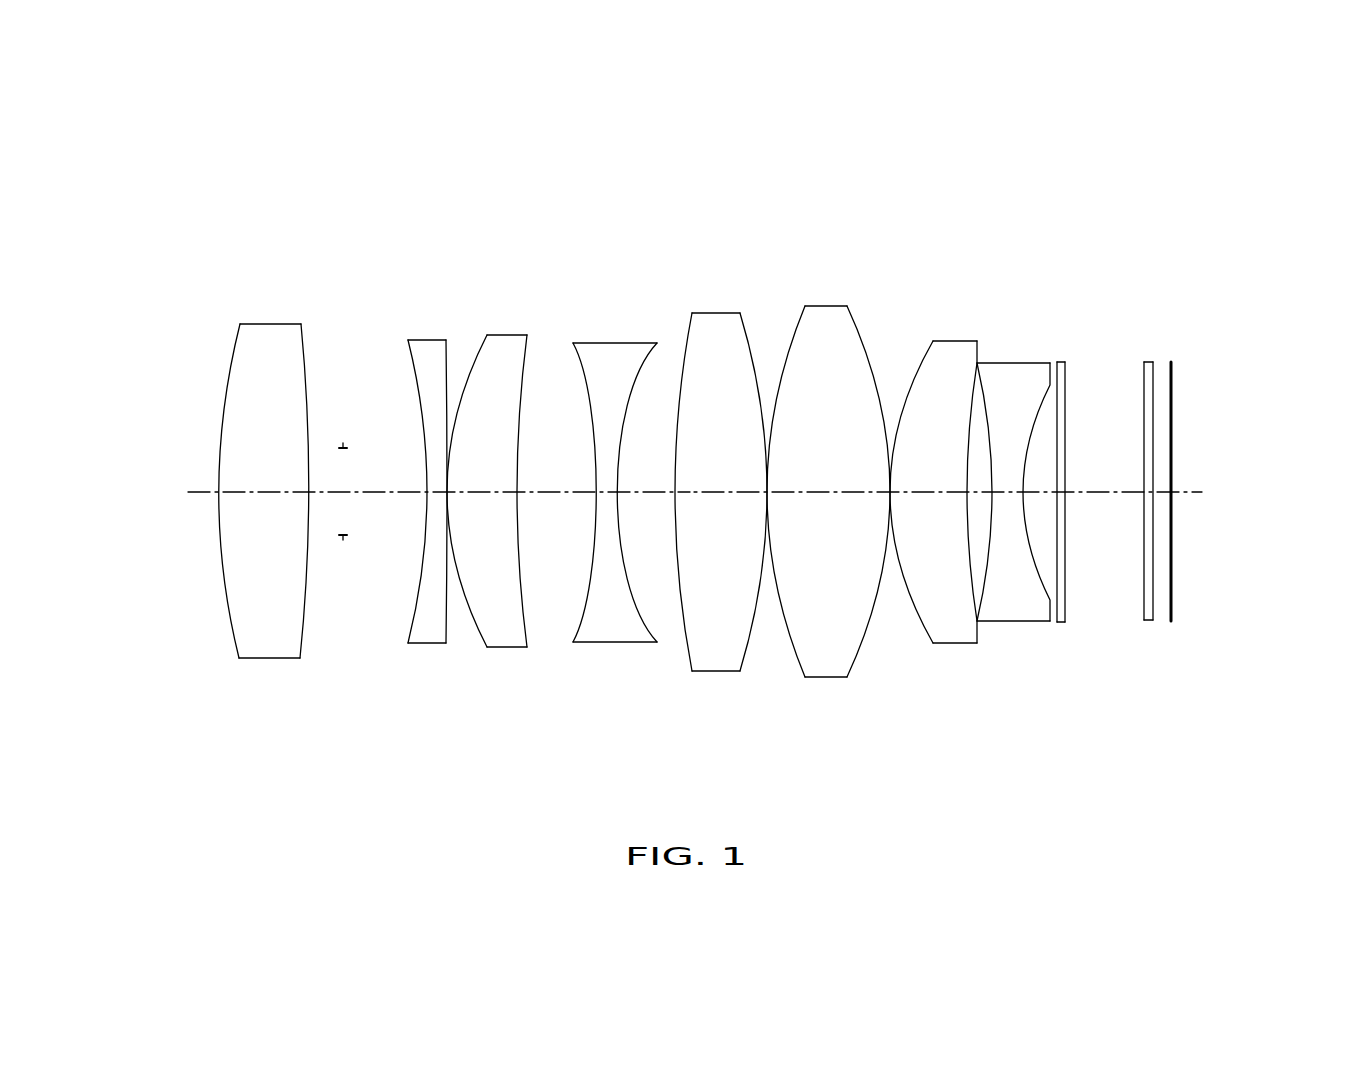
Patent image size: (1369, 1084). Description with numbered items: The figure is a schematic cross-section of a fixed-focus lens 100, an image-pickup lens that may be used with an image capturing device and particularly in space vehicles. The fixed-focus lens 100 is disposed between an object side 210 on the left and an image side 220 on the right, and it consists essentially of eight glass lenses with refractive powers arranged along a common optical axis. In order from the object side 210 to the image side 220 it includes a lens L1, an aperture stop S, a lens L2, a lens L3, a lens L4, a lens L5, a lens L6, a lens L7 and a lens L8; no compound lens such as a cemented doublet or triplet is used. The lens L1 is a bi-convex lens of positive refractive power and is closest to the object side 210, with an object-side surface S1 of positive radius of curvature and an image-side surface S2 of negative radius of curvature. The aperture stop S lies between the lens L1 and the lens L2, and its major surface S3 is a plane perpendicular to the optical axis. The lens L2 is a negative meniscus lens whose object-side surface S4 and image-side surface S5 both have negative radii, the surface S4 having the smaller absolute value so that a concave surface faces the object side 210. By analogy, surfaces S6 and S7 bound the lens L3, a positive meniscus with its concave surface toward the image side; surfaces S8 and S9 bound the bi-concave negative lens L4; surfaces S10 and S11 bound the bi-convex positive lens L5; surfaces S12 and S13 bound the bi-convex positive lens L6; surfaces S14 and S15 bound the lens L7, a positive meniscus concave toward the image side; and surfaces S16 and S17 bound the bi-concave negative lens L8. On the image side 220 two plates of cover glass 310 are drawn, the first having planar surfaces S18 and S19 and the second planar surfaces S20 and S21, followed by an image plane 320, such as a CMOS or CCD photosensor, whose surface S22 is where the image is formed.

The fixed-focus lens 100 is at (197, 157).
The object side 210 is at (121, 502).
The image side 220 is at (1228, 507).
The lens L1 is at (270, 333).
The lens L2 is at (428, 345).
The lens L3 is at (505, 343).
The lens L4 is at (613, 347).
The lens L5 is at (715, 318).
The lens L6 is at (823, 313).
The lens L7 is at (952, 347).
The lens L8 is at (1012, 370).
The aperture stop S is at (343, 443).
The surface S1 is at (235, 635).
The surface S2 is at (303, 635).
The surface S3 is at (342, 537).
The surface S4 is at (409, 632).
The surface S5 is at (447, 633).
The surface S6 is at (487, 647).
The surface S7 is at (527, 633).
The surface S8 is at (578, 623).
The surface S9 is at (648, 622).
The surface S10 is at (688, 645).
The surface S11 is at (747, 648).
The surface S12 is at (800, 667).
The surface S13 is at (858, 648).
The surface S14 is at (923, 623).
The surface S15 is at (985, 582).
The surface S16 is at (1048, 602).
The surface S17 is at (1053, 600).
The surface S18 is at (1067, 590).
The surface S19 is at (1143, 605).
The surface S20 is at (1152, 617).
The surface S21 is at (1170, 620).
The surface S22 is at (1172, 592).
The cover glass 310 is at (1060, 363).
The image plane 320 is at (1172, 375).